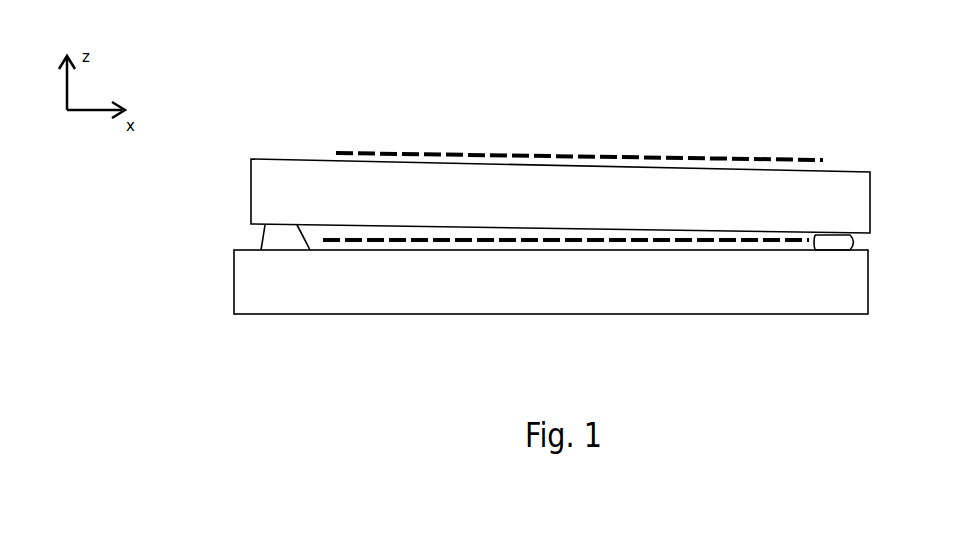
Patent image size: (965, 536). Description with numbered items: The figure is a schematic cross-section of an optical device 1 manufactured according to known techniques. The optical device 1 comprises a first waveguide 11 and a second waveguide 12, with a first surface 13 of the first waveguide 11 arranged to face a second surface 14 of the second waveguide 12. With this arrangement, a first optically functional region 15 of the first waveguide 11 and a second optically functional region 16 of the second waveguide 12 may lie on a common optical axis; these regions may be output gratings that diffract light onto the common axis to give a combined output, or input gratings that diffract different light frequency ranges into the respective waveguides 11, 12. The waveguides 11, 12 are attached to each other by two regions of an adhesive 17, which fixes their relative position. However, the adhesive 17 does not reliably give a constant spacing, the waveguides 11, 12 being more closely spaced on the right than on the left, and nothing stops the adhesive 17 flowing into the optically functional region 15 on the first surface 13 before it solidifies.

The optical device 1 is at (338, 66).
The first waveguide 11 is at (872, 278).
The second waveguide 12 is at (873, 192).
The first surface 13 is at (410, 225).
The second surface 14 is at (410, 225).
The first optically functional region 15 is at (620, 245).
The second optically functional region 16 is at (692, 155).
The adhesive 17 is at (267, 240).